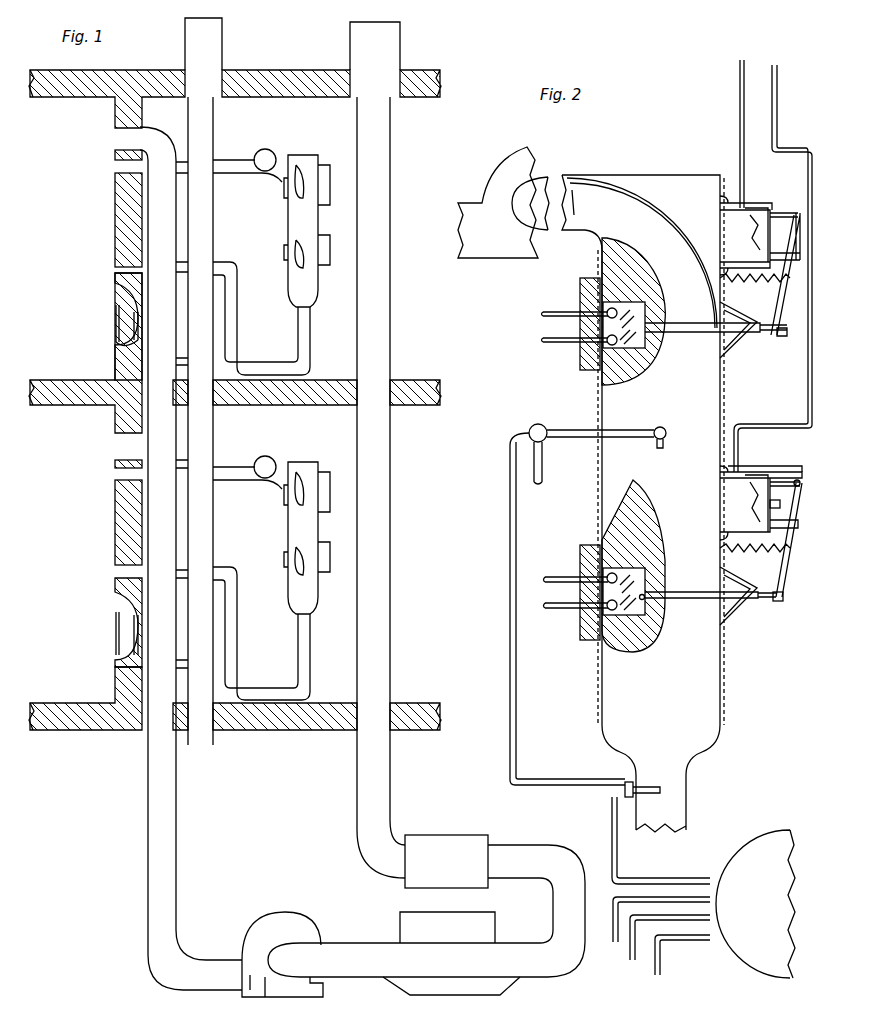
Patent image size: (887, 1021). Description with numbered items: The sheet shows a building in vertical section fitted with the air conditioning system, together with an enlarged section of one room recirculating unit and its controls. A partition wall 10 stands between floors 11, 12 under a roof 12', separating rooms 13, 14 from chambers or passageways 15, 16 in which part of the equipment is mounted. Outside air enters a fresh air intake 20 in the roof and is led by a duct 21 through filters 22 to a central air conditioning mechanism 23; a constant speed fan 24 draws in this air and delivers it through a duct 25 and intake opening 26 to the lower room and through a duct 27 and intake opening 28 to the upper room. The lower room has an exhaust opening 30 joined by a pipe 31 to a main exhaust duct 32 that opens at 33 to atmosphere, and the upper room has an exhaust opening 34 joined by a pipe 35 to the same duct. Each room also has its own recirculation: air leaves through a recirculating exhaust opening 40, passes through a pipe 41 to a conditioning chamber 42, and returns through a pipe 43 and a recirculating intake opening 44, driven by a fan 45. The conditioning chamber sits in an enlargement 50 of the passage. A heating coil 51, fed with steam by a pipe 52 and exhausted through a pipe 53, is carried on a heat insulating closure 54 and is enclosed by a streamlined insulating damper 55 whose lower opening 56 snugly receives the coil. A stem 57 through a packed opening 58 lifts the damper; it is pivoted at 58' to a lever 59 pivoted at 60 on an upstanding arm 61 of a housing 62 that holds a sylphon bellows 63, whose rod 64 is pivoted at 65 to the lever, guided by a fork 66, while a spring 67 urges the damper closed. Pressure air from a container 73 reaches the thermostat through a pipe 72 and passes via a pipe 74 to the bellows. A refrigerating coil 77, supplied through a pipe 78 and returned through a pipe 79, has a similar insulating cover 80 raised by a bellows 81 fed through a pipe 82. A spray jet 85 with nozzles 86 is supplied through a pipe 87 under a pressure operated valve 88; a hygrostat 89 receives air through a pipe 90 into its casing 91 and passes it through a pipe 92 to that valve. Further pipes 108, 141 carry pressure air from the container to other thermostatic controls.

In FIG. 1, the partition wall 10 is at (120, 526).
In FIG. 1, the floor 11 is at (72, 715).
In FIG. 1, the floor 12 is at (85, 353).
In FIG. 1, the roof 12' is at (107, 86).
In FIG. 1, the room 13 is at (95, 220).
In FIG. 1, the room 14 is at (95, 522).
In FIG. 1, the chamber or passageway 15 is at (403, 161).
In FIG. 1, the chamber or passageway 16 is at (271, 563).
In FIG. 1, the fresh air intake 20 is at (392, 50).
In FIG. 1, the duct 21 is at (384, 304).
In FIG. 1, the filters 22 is at (450, 848).
In FIG. 1, the central air conditioning mechanism 23 is at (451, 953).
In FIG. 1, the fan 24 is at (268, 930).
In FIG. 1, the duct 25 is at (195, 764).
In FIG. 1, the intake opening 26 is at (127, 453).
In FIG. 1, the duct 27 is at (162, 360).
In FIG. 1, the intake opening 28 is at (144, 143).
In FIG. 1, the exhaust opening 30 is at (126, 598).
In FIG. 1, the pipe 31 is at (136, 670).
In FIG. 1, the main exhaust duct 32 is at (204, 530).
In FIG. 1, the exhaust outlet 33 is at (205, 60).
In FIG. 1, the exhaust opening 34 is at (120, 296).
In FIG. 1, the pipe 35 is at (132, 323).
In FIG. 1, the recirculating exhaust opening 40 is at (118, 266).
In FIG. 1, the pipe 41 is at (226, 314).
In FIG. 1, the conditioning chamber 42 is at (288, 230).
In FIG. 1, the pipe 43 is at (240, 168).
In FIG. 1, the recirculating intake opening 44 is at (118, 163).
In FIG. 1, the fan 45 is at (271, 152).
In FIG. 2, the enlargement of recirculating passage 50 is at (643, 503).
In FIG. 2, the heating coil 51 is at (640, 578).
In FIG. 2, the pipe 52 is at (556, 609).
In FIG. 2, the pipe 53 is at (556, 577).
In FIG. 2, the heat insulating closure 54 is at (587, 545).
In FIG. 2, the damper 55 is at (650, 530).
In FIG. 2, the lower opening 56 is at (644, 598).
In FIG. 2, the stem 57 is at (688, 602).
In FIG. 2, the packed opening 58 is at (714, 613).
In FIG. 2, the pivotal connection 58' is at (790, 606).
In FIG. 2, the lever 59 is at (782, 574).
In FIG. 2, the pivot 60 is at (808, 480).
In FIG. 2, the upstanding arm 61 is at (784, 488).
In FIG. 2, the housing 62 is at (764, 488).
In FIG. 2, the sylphon bellows 63 is at (727, 498).
In FIG. 2, the rod 64 is at (798, 524).
In FIG. 2, the pivotal connection 65 is at (782, 504).
In FIG. 2, the guide or fork 66 is at (790, 538).
In FIG. 2, the spring 67 is at (744, 554).
In FIG. 2, the pipe 72 is at (682, 947).
In FIG. 2, the container 73 is at (755, 904).
In FIG. 2, the pipe 74 is at (775, 130).
In FIG. 2, the refrigerating coil 77 is at (640, 314).
In FIG. 2, the pipe 78 is at (562, 344).
In FIG. 2, the pipe 79 is at (560, 312).
In FIG. 2, the insulating cover 80 is at (636, 278).
In FIG. 2, the bellows 81 is at (738, 230).
In FIG. 2, the pipe 82 is at (740, 150).
In FIG. 2, the spray jet 85 is at (664, 430).
In FIG. 2, the nozzles 86 is at (663, 449).
In FIG. 2, the pipe 87 is at (580, 430).
In FIG. 2, the valve 88 is at (531, 446).
In FIG. 2, the hygrostat 89 is at (664, 778).
In FIG. 2, the pipe 90 is at (668, 880).
In FIG. 2, the casing 91 is at (628, 782).
In FIG. 2, the pipe 92 is at (512, 706).
In FIG. 2, the pipe 108 is at (670, 929).
In FIG. 2, the pipe 141 is at (661, 911).